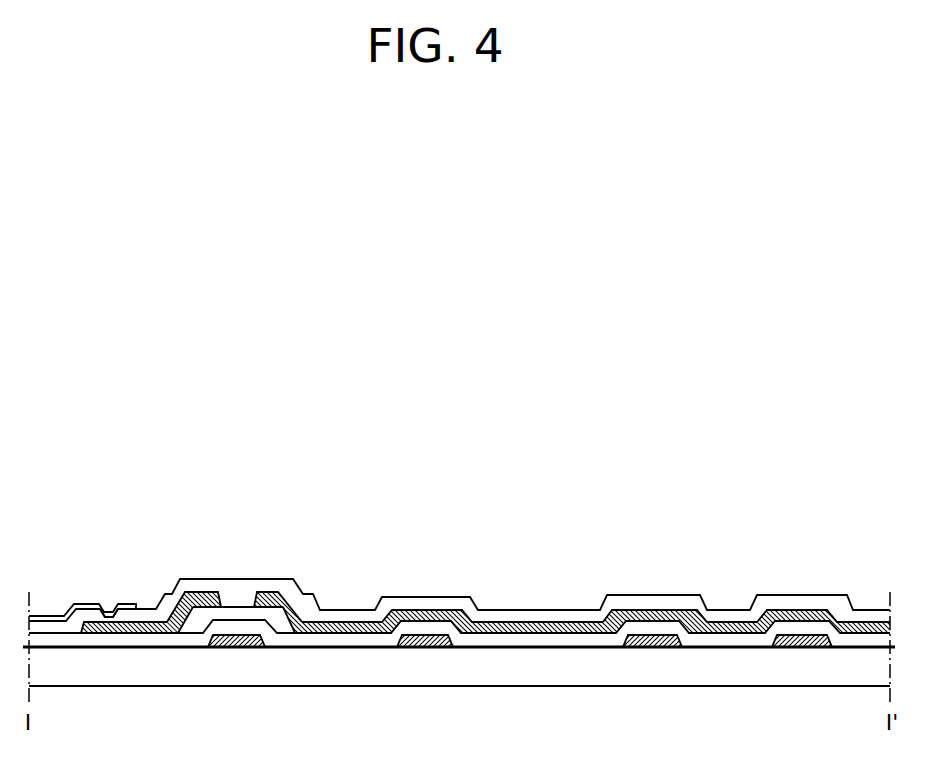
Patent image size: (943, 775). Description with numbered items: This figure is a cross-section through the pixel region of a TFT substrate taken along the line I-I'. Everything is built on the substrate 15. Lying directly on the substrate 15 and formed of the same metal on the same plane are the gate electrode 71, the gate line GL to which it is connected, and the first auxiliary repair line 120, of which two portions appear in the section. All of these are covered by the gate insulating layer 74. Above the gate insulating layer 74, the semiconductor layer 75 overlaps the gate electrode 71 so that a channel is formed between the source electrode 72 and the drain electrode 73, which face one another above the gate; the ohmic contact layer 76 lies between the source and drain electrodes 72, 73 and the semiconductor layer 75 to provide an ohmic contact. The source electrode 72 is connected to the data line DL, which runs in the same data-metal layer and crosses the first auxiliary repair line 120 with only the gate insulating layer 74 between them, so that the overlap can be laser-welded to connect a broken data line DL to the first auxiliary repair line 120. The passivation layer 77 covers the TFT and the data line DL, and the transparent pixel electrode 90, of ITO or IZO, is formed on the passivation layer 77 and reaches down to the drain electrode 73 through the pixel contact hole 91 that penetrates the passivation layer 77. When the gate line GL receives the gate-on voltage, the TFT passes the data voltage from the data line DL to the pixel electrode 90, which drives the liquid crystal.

The substrate 15 is at (850, 675).
The gate electrode 71 is at (240, 648).
The source electrode 72 is at (345, 634).
The drain electrode 73 is at (132, 634).
The gate insulating layer 74 is at (570, 641).
The semiconductor layer 75 is at (193, 626).
The ohmic contact layer 76 is at (293, 634).
The passivation layer 77 is at (498, 621).
The pixel electrode 90 is at (63, 622).
The pixel contact hole 91 is at (108, 612).
The first auxiliary repair line 120 is at (655, 647).
The gate line GL is at (428, 647).
The data line DL is at (730, 633).